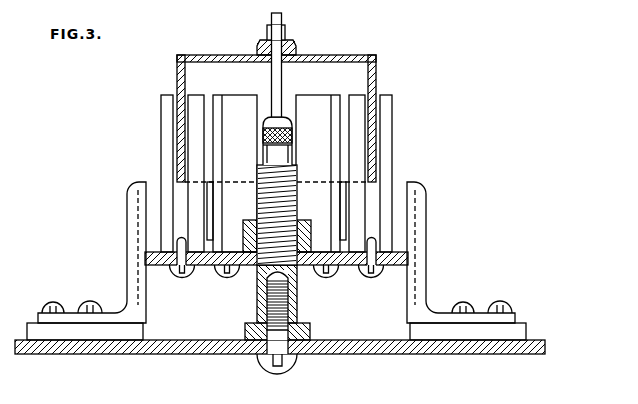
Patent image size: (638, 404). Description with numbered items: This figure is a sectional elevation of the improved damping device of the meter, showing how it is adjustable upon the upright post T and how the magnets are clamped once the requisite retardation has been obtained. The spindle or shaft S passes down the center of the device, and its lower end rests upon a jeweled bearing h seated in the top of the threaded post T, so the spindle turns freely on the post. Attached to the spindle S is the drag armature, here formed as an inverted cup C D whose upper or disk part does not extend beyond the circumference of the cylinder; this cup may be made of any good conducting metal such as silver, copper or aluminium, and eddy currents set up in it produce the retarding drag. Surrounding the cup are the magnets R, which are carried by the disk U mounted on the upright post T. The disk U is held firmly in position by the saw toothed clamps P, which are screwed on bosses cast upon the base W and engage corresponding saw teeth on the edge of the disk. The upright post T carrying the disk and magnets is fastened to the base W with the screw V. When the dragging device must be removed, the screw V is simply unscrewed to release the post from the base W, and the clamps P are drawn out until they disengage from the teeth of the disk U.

The spindle S is at (279, 19).
The drag armature D is at (327, 55).
The inverted cup C is at (376, 75).
The jeweled bearing h is at (283, 125).
The magnets R is at (167, 143).
The saw toothed clamps P is at (132, 263).
The disk U is at (224, 274).
The upright post T is at (292, 275).
The base W is at (333, 346).
The screw V is at (260, 358).